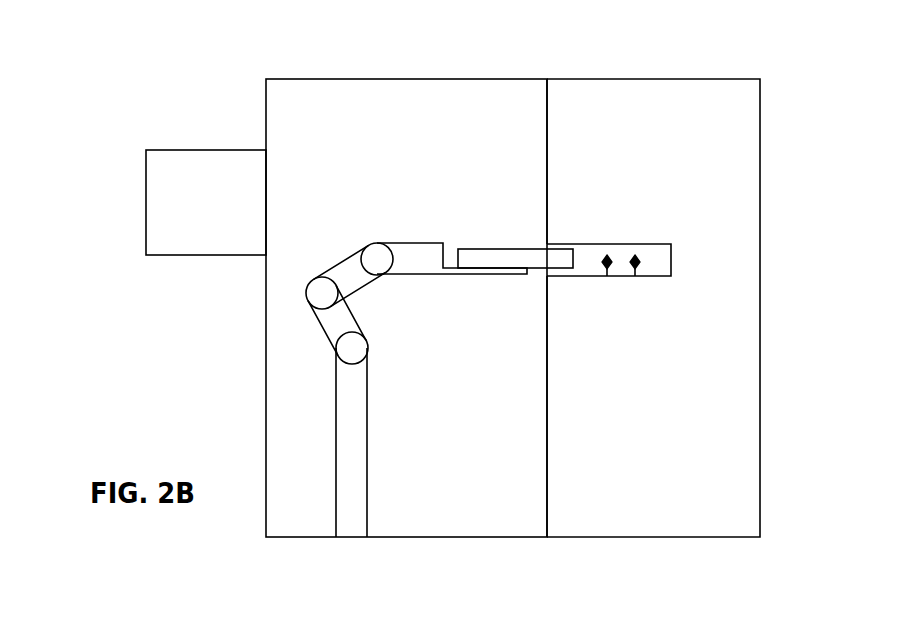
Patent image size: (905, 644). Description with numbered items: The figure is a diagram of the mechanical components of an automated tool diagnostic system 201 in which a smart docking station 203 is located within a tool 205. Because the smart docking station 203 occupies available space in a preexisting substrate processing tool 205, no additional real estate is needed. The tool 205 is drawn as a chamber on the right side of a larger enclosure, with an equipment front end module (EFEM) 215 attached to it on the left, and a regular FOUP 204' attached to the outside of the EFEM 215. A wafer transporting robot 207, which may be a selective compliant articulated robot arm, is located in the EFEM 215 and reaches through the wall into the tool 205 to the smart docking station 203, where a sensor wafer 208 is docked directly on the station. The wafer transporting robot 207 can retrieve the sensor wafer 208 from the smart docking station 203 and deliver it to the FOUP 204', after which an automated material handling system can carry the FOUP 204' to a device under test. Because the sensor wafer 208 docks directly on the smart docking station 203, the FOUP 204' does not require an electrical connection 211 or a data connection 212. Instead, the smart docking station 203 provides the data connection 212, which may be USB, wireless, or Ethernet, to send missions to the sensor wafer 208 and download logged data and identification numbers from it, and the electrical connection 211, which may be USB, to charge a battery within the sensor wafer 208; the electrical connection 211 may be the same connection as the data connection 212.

The automated tool diagnostic system 201 is at (112, 49).
The regular FOUP 204' is at (206, 202).
The equipment front end module (EFEM) 215 is at (390, 193).
The tool 205 is at (646, 193).
The wafer transporting robot 207 is at (367, 422).
The sensor wafer 208 is at (499, 249).
The smart docking station 203 is at (657, 276).
The electrical connection 211 is at (603, 278).
The data connection 212 is at (638, 278).